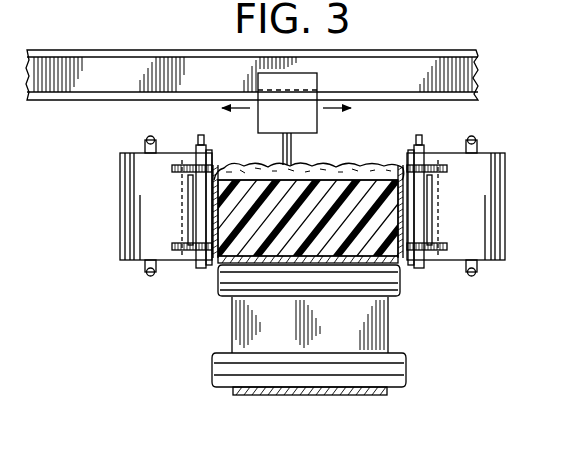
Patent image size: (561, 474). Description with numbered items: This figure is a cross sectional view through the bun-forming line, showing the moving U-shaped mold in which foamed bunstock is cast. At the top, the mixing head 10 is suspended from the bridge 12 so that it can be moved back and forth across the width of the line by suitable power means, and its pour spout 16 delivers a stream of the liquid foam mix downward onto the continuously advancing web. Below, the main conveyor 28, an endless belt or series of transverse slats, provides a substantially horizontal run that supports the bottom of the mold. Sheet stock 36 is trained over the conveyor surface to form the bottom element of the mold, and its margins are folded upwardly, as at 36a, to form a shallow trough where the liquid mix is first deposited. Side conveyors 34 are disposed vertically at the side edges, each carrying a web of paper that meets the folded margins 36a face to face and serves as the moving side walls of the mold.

The mixing head 10 is at (300, 104).
The bridge 12 is at (402, 66).
The pour spout 16 is at (293, 150).
The main conveyor 28 is at (404, 308).
The side conveyors 34 is at (212, 207).
The sheet stock 36 is at (352, 260).
The folded margins 36a is at (209, 266).